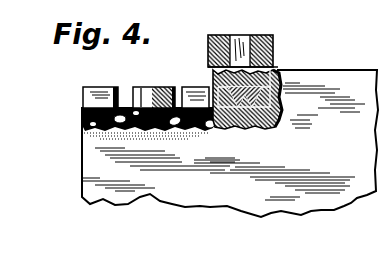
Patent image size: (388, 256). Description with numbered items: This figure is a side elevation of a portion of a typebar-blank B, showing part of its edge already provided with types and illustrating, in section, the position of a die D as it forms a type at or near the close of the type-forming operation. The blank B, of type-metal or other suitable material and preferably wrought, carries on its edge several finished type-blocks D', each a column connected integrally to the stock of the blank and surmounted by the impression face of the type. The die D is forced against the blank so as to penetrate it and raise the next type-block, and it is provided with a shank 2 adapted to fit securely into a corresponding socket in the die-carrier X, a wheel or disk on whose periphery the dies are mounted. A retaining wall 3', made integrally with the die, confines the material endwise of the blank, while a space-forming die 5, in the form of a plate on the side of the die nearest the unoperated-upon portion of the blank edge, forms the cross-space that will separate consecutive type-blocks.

The shank 2 is at (237, 35).
The die-carrier X is at (242, 35).
The die D is at (262, 84).
The type-block D' is at (146, 82).
The space-forming die 5 is at (283, 108).
The blank B is at (230, 143).
The retaining wall 3' is at (148, 136).